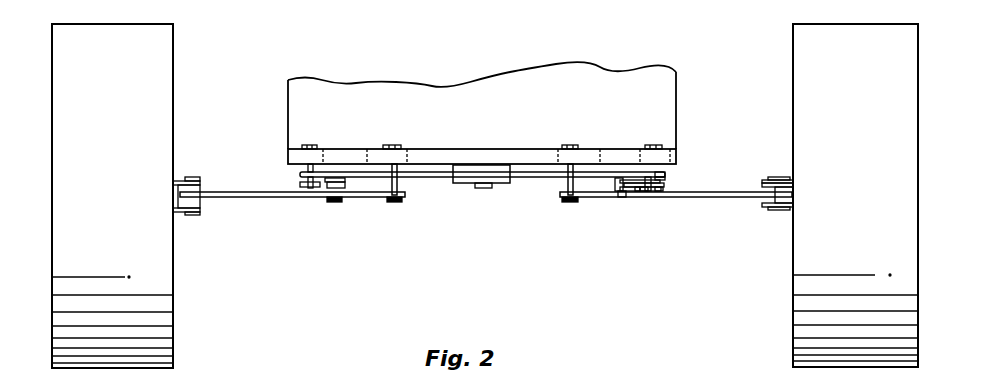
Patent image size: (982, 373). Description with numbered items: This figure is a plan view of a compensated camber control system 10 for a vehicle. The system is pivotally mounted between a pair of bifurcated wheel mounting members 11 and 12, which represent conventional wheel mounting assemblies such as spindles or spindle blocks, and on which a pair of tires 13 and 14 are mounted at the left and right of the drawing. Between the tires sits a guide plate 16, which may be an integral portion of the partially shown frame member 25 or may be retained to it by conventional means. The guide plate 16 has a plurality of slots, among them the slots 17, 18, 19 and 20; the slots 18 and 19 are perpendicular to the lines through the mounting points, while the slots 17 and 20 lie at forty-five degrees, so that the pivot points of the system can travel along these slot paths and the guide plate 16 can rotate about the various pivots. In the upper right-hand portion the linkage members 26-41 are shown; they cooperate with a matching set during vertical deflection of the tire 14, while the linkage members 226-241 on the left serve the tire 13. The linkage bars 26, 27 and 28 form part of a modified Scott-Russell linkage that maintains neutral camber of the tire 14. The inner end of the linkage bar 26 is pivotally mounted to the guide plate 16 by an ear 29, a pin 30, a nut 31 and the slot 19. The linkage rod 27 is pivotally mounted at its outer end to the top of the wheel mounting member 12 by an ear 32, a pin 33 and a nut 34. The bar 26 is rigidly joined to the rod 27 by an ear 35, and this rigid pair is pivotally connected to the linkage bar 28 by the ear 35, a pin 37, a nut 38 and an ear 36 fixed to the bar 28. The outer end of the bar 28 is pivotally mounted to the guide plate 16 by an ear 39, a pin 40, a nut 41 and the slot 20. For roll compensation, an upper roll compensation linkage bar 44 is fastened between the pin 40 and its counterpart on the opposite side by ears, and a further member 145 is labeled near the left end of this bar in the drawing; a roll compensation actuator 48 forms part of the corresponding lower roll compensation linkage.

The compensated camber control system 10 is at (482, 89).
The bifurcated wheel mounting member 11 is at (178, 198).
The bifurcated wheel mounting member 12 is at (792, 193).
The tire 13 is at (128, 63).
The tire 14 is at (880, 65).
The guide plate 16 is at (452, 149).
The slot 17 is at (325, 147).
The slot 18 is at (377, 147).
The slot 19 is at (592, 147).
The slot 20 is at (670, 147).
The frame member 25 is at (515, 80).
The linkage bar 26 is at (587, 197).
The linkage rod 27 is at (748, 200).
The linkage bar 28 is at (647, 181).
The ear 29 is at (562, 200).
The pin 30 is at (563, 182).
The nut 31 is at (562, 147).
The ear 32 is at (792, 197).
The pin 33 is at (768, 211).
The nut 34 is at (773, 177).
The ear 35 is at (645, 191).
The ear 36 is at (665, 178).
The pin 37 is at (620, 196).
The nut 38 is at (618, 183).
The ear 39 is at (667, 191).
The pin 40 is at (661, 173).
The nut 41 is at (643, 147).
The upper roll compensation linkage bar 44 is at (432, 177).
The roll compensation actuator 48 is at (465, 188).
The upper bar 145 is at (300, 175).
The linkage members 26-41 is at (735, 48).
The linkage members 226-241 is at (342, 272).